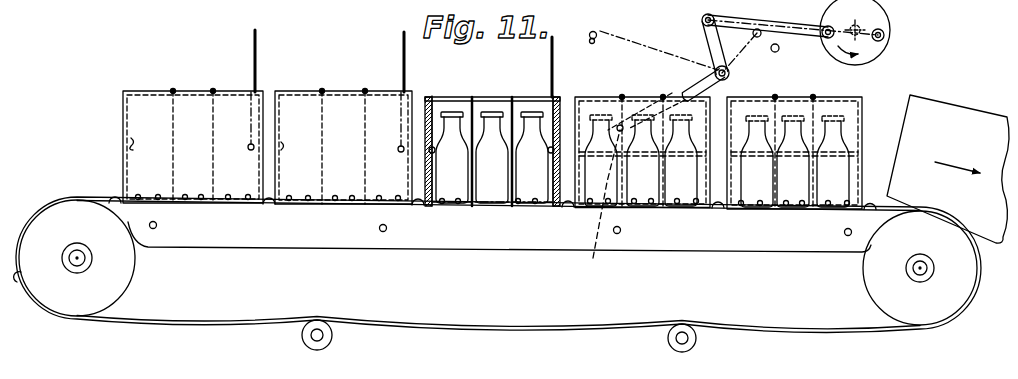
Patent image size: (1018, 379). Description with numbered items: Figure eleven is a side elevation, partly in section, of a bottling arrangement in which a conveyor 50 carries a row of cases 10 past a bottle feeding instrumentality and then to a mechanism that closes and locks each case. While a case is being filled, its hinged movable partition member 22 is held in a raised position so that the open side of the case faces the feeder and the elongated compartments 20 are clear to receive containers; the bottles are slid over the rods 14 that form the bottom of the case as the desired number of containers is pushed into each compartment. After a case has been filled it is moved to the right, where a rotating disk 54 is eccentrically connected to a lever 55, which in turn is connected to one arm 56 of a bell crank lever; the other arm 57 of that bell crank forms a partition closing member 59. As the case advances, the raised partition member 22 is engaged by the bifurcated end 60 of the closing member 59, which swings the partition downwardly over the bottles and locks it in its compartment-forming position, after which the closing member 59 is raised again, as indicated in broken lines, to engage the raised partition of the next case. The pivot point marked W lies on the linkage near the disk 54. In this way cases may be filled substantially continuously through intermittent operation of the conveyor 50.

The case 10 is at (121, 122).
The rods 14 is at (458, 203).
The elongated compartments 20 is at (447, 104).
The movable partition member 22 is at (252, 60).
The conveyor 50 is at (240, 204).
The rotating disk 54 is at (875, 50).
The lever 55 is at (805, 24).
The arm of bell crank lever 56 is at (713, 38).
The other arm of bell crank lever 57 is at (692, 92).
The partition closing member 59 is at (597, 32).
The bifurcated end 60 is at (590, 36).
The pivot pin W is at (780, 50).